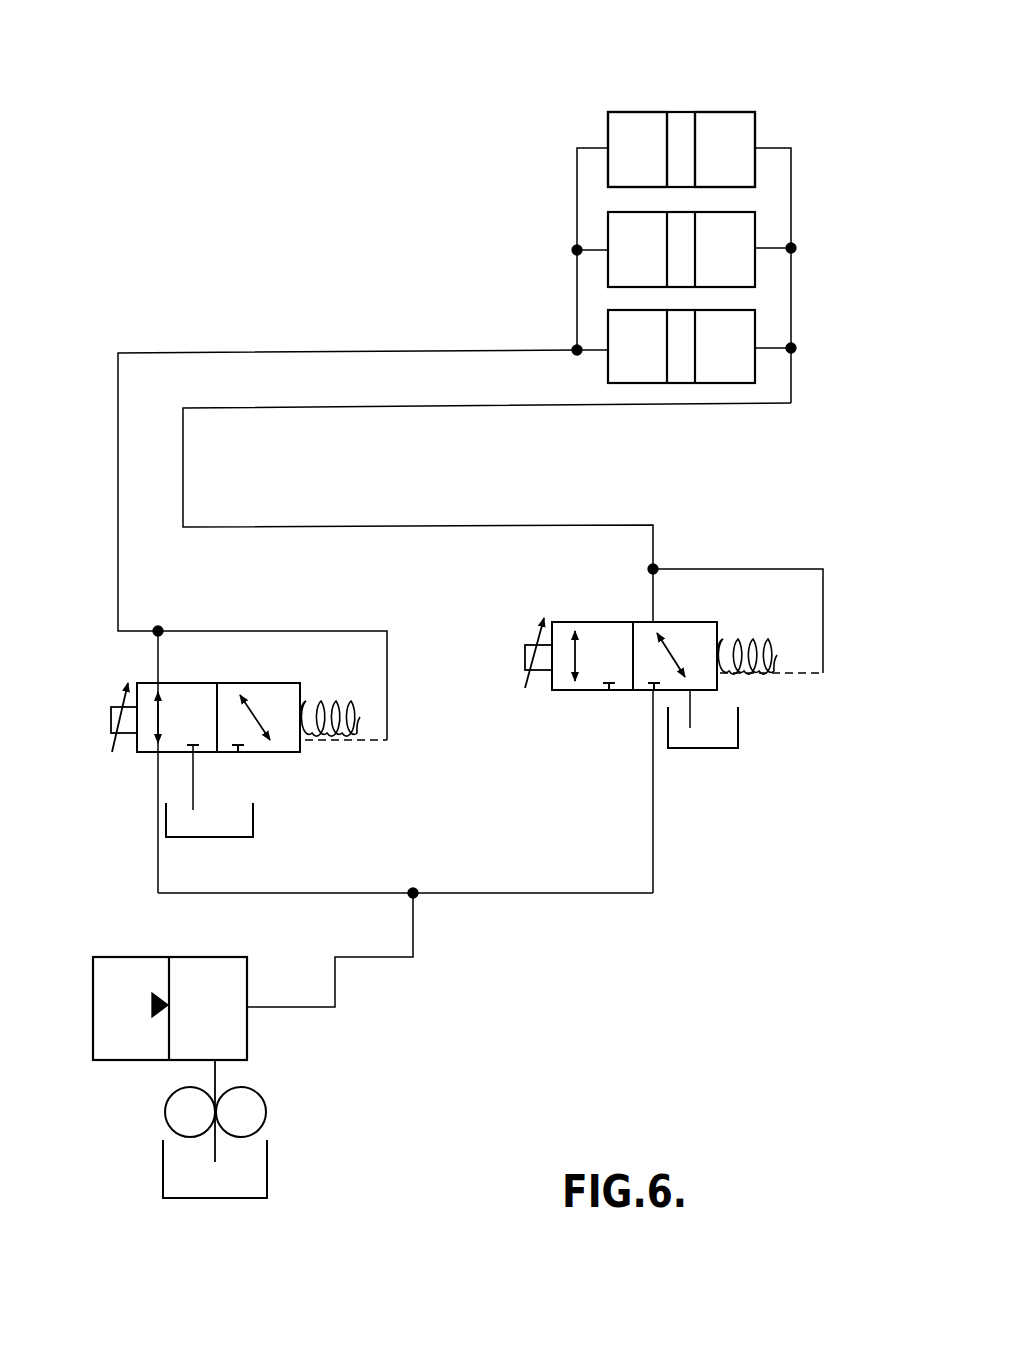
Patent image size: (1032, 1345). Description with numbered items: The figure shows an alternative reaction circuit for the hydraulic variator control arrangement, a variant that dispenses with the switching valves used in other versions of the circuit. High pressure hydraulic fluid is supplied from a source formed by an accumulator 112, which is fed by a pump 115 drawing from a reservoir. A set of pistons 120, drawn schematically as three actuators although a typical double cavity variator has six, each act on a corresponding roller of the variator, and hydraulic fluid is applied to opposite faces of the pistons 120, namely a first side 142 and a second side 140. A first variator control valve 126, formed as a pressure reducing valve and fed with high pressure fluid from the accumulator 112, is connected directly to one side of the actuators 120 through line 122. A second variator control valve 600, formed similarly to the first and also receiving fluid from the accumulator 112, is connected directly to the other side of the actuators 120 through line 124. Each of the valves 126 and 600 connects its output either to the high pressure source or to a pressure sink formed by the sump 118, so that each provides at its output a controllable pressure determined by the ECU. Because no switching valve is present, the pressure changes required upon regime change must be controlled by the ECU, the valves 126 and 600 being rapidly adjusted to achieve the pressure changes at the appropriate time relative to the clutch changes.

The pistons 120 is at (675, 111).
The second side 140 is at (630, 142).
The first side 142 is at (720, 142).
The control line 122 is at (397, 350).
The control line 124 is at (543, 406).
The variator control valve 126 is at (93, 743).
The sump 118 is at (253, 820).
The second variator control valve 600 is at (735, 629).
The accumulator 112 is at (136, 957).
The pump 115 is at (267, 1125).